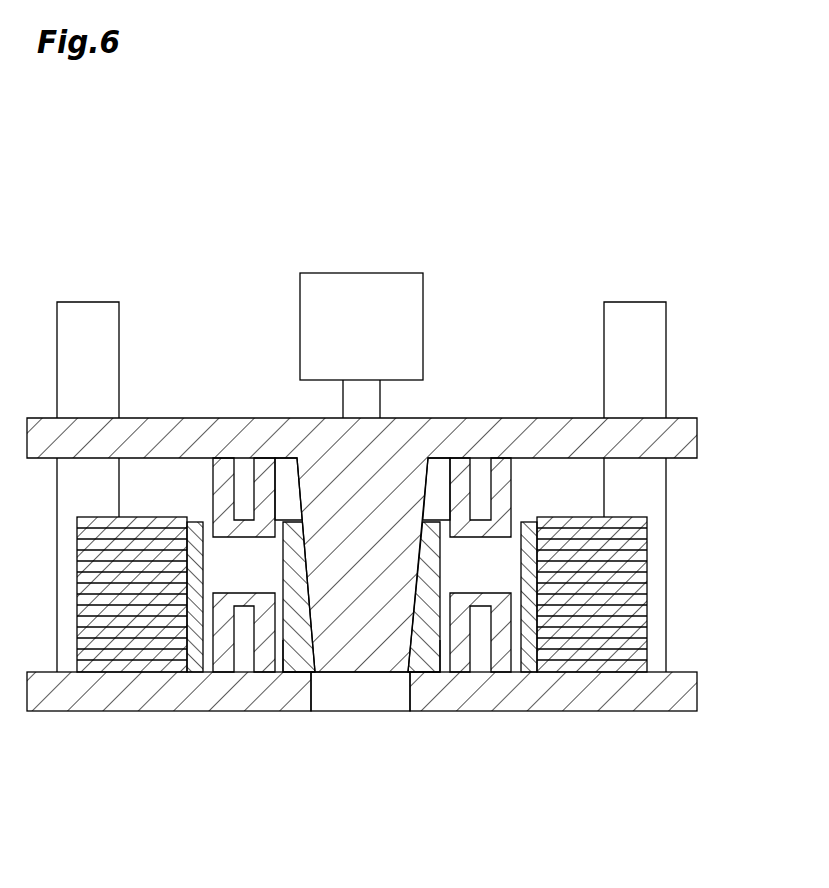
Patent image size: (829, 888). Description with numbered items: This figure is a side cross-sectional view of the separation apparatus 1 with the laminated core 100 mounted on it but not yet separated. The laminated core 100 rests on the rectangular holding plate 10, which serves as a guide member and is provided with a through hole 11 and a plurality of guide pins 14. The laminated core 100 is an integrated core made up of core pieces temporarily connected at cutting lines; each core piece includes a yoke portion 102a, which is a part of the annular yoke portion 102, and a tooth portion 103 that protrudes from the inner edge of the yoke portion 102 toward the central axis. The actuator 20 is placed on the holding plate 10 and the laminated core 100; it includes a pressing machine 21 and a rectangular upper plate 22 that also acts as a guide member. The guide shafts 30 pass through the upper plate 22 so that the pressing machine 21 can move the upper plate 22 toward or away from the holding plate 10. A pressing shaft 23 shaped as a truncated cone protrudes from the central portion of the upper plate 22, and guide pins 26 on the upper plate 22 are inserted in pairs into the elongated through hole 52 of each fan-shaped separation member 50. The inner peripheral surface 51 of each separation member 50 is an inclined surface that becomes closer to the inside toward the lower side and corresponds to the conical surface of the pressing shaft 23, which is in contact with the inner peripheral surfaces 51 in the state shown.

The separation apparatus 1 is at (686, 130).
The holding plate 10 is at (697, 700).
The through hole 11 is at (312, 698).
The guide pin 14 is at (245, 637).
The actuator 20 is at (525, 254).
The pressing machine 21 is at (372, 273).
The upper plate 22 is at (683, 418).
The pressing shaft 23 is at (432, 480).
The guide pin 26 is at (222, 500).
The guide shaft 30 is at (89, 302).
The separation member 50 is at (290, 518).
The inner peripheral surface 51 is at (321, 641).
The through hole 52 is at (285, 652).
The laminated core 100 is at (644, 499).
The yoke portion 102 is at (317, 508).
The yoke portion 102a is at (98, 517).
The tooth portion 103 is at (157, 517).